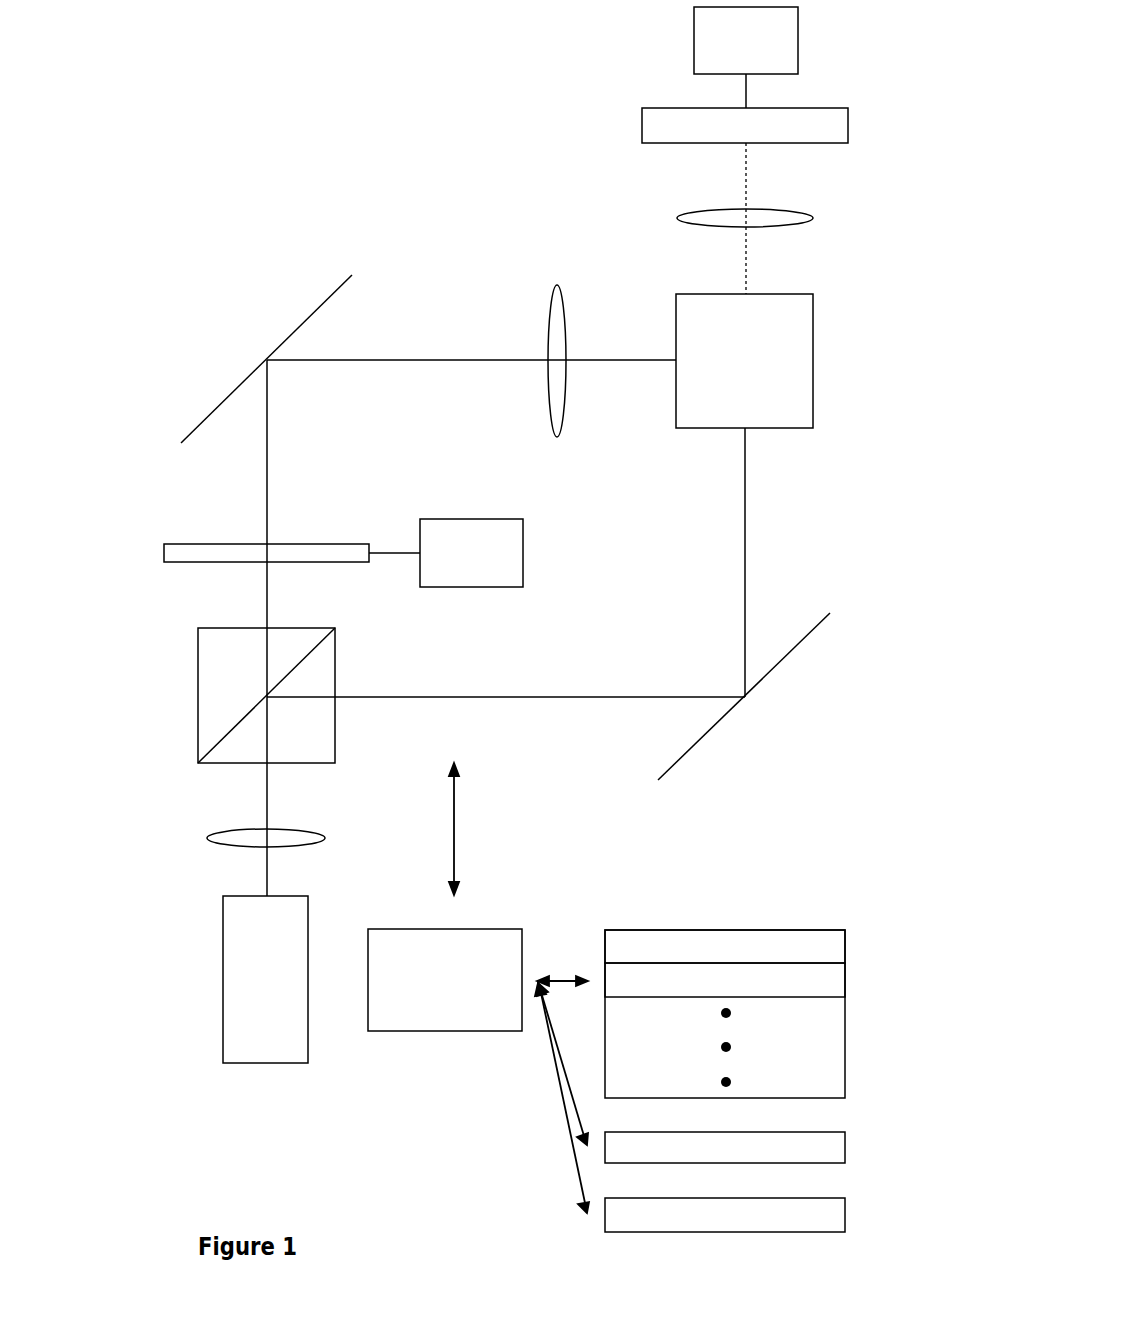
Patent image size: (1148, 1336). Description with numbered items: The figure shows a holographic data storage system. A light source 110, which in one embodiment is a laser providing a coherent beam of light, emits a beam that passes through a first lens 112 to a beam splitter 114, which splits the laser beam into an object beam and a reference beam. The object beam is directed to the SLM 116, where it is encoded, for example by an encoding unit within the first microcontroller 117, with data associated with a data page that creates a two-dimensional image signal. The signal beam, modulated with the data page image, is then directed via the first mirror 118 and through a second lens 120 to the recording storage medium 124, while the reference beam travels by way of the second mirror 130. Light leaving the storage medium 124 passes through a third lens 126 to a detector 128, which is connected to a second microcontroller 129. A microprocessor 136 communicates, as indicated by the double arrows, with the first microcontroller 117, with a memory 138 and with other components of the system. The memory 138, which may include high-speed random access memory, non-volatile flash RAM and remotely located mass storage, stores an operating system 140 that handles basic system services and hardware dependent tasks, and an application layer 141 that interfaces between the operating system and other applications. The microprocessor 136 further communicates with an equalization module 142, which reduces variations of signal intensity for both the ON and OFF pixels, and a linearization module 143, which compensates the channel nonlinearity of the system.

The light source 110 is at (223, 962).
The first lens 112 is at (210, 837).
The beam splitter 114 is at (198, 697).
The SLM 116 is at (250, 545).
The first microcontroller 117 is at (523, 554).
The first mirror 118 is at (318, 310).
The second lens 120 is at (548, 327).
The storage medium 124 is at (676, 294).
The third lens 126 is at (680, 218).
The detector 128 is at (643, 125).
The second microcontroller 129 is at (695, 23).
The second mirror 130 is at (692, 748).
The microprocessor 136 is at (445, 1031).
The memory 138 is at (625, 930).
The operating system 140 is at (846, 947).
The application layer 141 is at (846, 981).
The equalization module 142 is at (846, 1147).
The linearization module 143 is at (846, 1217).